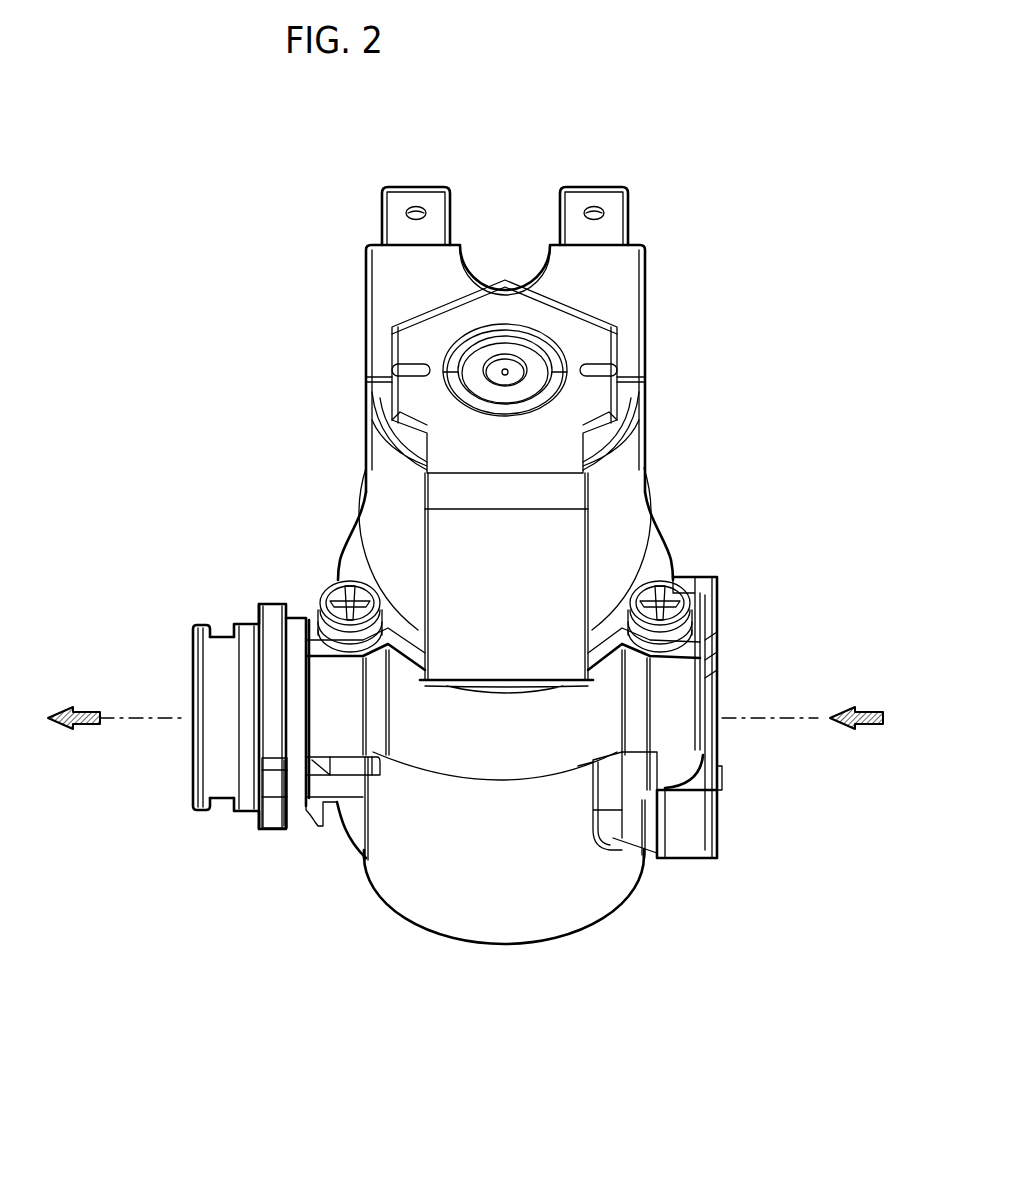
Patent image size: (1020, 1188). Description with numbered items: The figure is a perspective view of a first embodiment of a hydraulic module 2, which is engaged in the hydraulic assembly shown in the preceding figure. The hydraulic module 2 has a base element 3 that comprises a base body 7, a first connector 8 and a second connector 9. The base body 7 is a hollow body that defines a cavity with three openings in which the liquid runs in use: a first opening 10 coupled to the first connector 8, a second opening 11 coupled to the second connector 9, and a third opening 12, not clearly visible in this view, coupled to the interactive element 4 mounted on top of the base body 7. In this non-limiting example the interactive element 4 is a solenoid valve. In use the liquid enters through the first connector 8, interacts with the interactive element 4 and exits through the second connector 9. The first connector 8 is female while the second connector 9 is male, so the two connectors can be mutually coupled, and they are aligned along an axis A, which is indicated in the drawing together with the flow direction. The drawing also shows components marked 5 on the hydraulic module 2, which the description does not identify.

The hydraulic module 2 is at (449, 539).
The base element 3 is at (553, 897).
The interactive element 4 is at (645, 289).
The fastening screws 5 is at (340, 585).
The base body 7 is at (460, 767).
The first connector 8 is at (700, 576).
The second connector 9 is at (244, 630).
The first opening 10 is at (740, 628).
The second opening 11 is at (178, 682).
The third opening 12 is at (677, 505).
The axis A is at (790, 717).